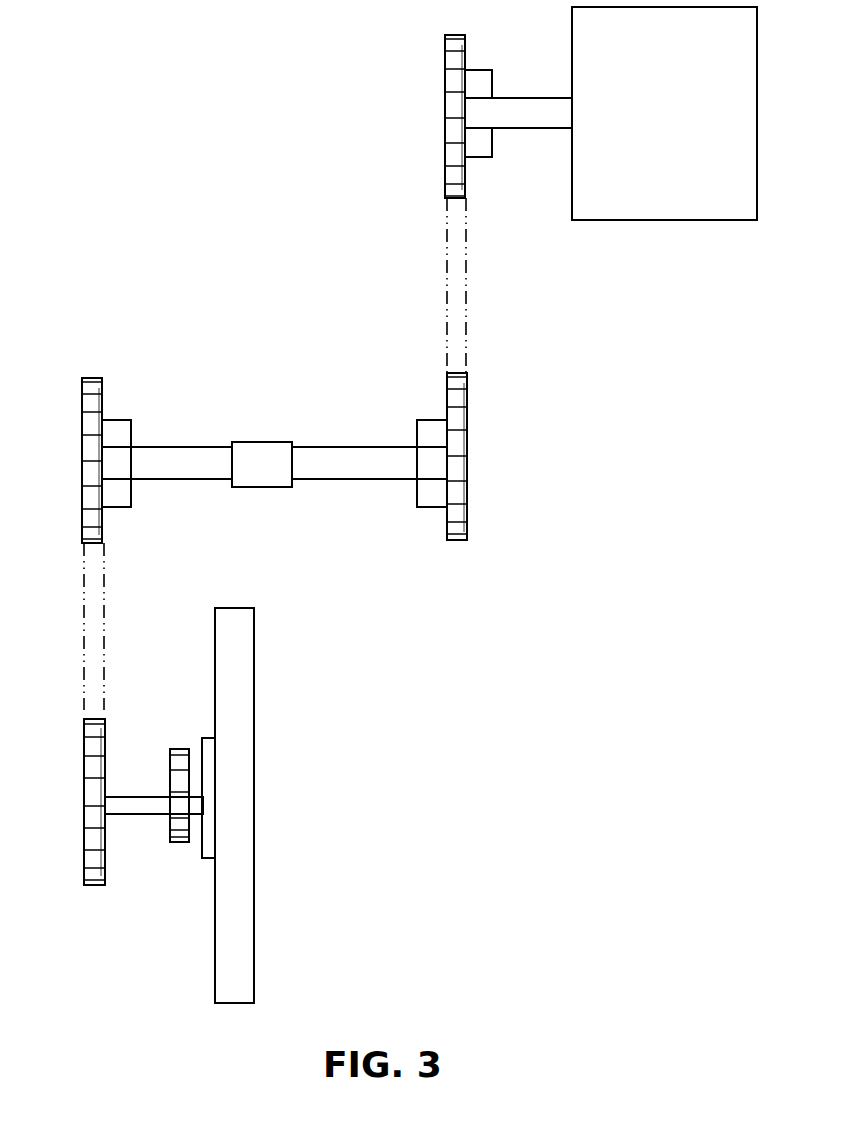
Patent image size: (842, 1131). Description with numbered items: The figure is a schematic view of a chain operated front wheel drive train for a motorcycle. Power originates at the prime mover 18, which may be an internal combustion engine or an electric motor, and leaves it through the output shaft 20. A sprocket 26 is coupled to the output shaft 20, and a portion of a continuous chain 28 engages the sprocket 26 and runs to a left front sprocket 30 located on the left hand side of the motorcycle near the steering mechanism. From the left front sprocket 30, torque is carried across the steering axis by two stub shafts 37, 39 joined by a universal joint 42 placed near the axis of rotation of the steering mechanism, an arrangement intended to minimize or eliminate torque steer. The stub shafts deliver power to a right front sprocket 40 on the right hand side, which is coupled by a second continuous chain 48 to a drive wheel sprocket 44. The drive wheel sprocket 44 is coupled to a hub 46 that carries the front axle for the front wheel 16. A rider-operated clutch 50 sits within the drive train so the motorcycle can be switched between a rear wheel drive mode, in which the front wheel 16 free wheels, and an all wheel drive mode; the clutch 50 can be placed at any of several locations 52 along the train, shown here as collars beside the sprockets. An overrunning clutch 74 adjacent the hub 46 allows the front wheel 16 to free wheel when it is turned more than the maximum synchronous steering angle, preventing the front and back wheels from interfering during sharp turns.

The front wheel 16 is at (221, 815).
The prime mover 18 is at (652, 137).
The output shaft 20 is at (539, 103).
The sprocket 26 is at (445, 123).
The continuous chain 28 is at (447, 305).
The left front sprocket 30 is at (467, 473).
The stub shaft 37 is at (358, 468).
The stub shaft 39 is at (170, 479).
The right front sprocket 40 is at (82, 455).
The universal joint 42 is at (250, 474).
The drive wheel sprocket 44 is at (84, 800).
The hub 46 is at (150, 814).
The continuous chain 48 is at (84, 645).
The clutch 50 is at (480, 158).
The locations 52 is at (477, 71).
The overrunning clutch 74 is at (180, 749).